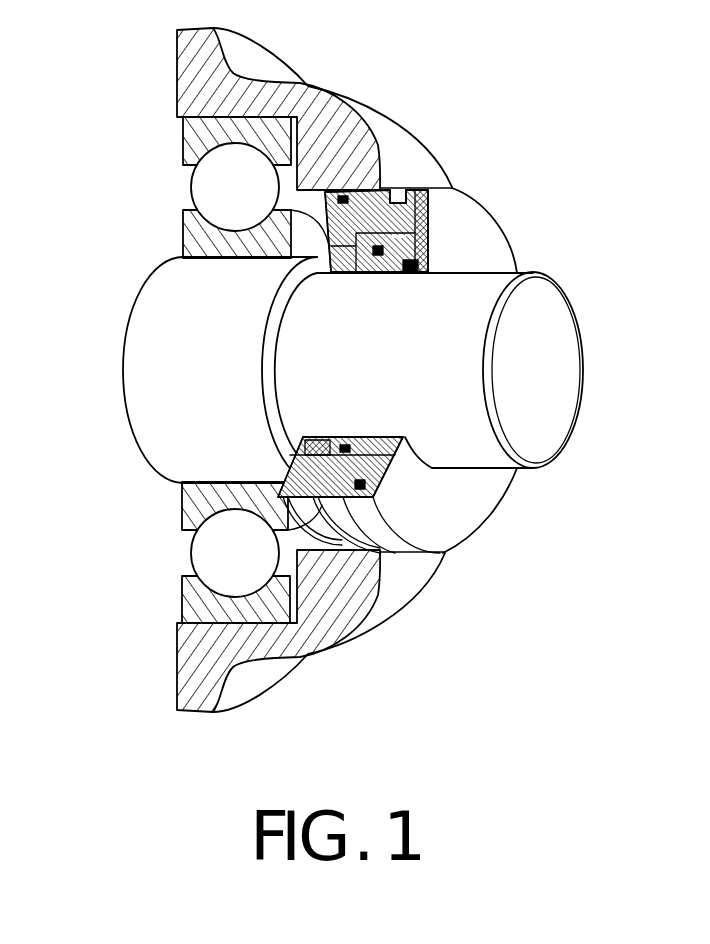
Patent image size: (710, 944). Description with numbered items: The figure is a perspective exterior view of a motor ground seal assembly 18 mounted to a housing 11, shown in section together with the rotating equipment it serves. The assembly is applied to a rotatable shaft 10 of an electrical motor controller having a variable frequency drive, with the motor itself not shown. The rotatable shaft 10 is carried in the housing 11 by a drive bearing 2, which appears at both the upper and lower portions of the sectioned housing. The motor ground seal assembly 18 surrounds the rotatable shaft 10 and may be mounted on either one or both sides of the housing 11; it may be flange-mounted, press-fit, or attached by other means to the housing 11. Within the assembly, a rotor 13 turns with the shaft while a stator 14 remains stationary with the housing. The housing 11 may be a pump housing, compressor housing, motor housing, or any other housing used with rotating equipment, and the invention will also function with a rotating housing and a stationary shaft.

The drive bearing 2 is at (183, 145).
The rotatable shaft 10 is at (583, 391).
The housing 11 is at (397, 620).
The rotor 13 is at (430, 242).
The stator 14 is at (387, 189).
The motor ground seal assembly 18 is at (500, 228).